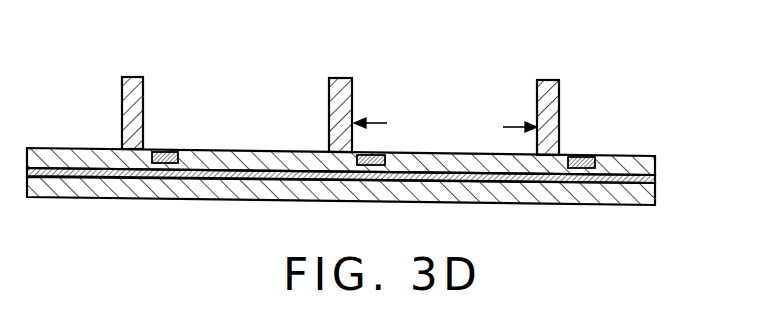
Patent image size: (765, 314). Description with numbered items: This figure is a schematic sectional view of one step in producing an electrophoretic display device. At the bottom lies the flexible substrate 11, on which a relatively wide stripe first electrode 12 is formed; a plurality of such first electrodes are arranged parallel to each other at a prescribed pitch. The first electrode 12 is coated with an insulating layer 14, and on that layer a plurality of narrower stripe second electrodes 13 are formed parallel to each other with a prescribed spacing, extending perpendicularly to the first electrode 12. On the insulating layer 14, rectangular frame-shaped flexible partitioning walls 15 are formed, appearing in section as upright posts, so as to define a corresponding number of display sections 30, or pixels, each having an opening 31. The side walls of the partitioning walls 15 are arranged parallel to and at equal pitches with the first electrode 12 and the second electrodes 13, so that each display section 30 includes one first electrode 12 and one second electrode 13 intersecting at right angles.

The flexible substrate 11 is at (655, 197).
The first electrode 12 is at (655, 179).
The second electrode 13 is at (583, 159).
The insulating layer 14 is at (655, 166).
The partitioning wall 15 is at (559, 91).
The display section 30 is at (445, 127).
The opening 31 is at (498, 88).